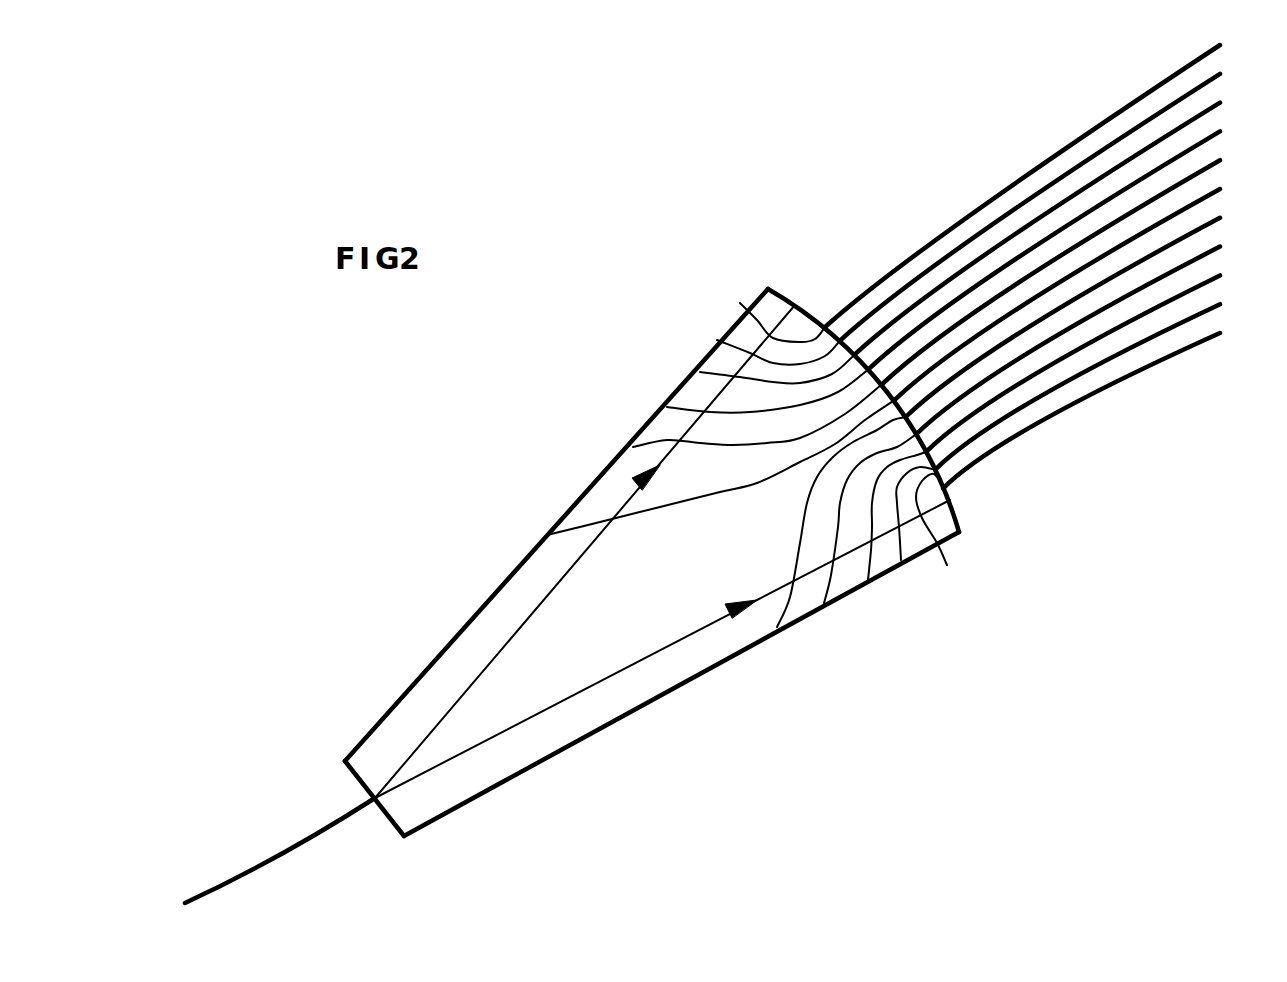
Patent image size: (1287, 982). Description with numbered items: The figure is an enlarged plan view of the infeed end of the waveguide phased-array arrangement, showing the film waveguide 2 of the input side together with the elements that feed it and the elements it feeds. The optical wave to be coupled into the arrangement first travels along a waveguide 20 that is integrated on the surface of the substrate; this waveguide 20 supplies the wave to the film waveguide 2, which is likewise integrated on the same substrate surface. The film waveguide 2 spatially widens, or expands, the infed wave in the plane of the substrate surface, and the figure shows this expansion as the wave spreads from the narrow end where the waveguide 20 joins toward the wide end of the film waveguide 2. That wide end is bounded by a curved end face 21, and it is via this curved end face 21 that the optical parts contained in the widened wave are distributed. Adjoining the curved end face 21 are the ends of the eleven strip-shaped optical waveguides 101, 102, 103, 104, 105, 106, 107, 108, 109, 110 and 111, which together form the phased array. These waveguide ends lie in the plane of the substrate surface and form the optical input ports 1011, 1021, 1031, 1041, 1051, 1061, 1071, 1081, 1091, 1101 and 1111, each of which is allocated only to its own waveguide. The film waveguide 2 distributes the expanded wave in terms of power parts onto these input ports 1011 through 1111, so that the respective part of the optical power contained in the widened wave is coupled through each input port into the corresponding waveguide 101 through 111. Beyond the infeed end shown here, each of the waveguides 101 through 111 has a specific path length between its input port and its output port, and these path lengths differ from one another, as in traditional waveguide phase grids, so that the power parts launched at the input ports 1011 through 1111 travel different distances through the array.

The film waveguide 2 is at (642, 708).
The waveguide 20 is at (275, 857).
The curved end face 21 is at (960, 498).
The strip-shaped optical waveguide 101 is at (1195, 344).
The strip-shaped optical waveguide 102 is at (1140, 343).
The strip-shaped optical waveguide 103 is at (1082, 347).
The strip-shaped optical waveguide 104 is at (1000, 371).
The strip-shaped optical waveguide 105 is at (950, 380).
The strip-shaped optical waveguide 106 is at (928, 371).
The strip-shaped optical waveguide 107 is at (948, 331).
The strip-shaped optical waveguide 108 is at (972, 289).
The strip-shaped optical waveguide 109 is at (1010, 238).
The strip-shaped optical waveguide 110 is at (1056, 181).
The strip-shaped optical waveguide 111 is at (1088, 133).
The optical input port 1011 is at (947, 565).
The optical input port 1021 is at (901, 560).
The optical input port 1031 is at (868, 580).
The optical input port 1041 is at (824, 603).
The optical input port 1051 is at (777, 627).
The optical input port 1061 is at (547, 535).
The optical input port 1071 is at (633, 447).
The optical input port 1081 is at (667, 407).
The optical input port 1091 is at (700, 372).
The optical input port 1101 is at (717, 340).
The optical input port 1111 is at (740, 303).